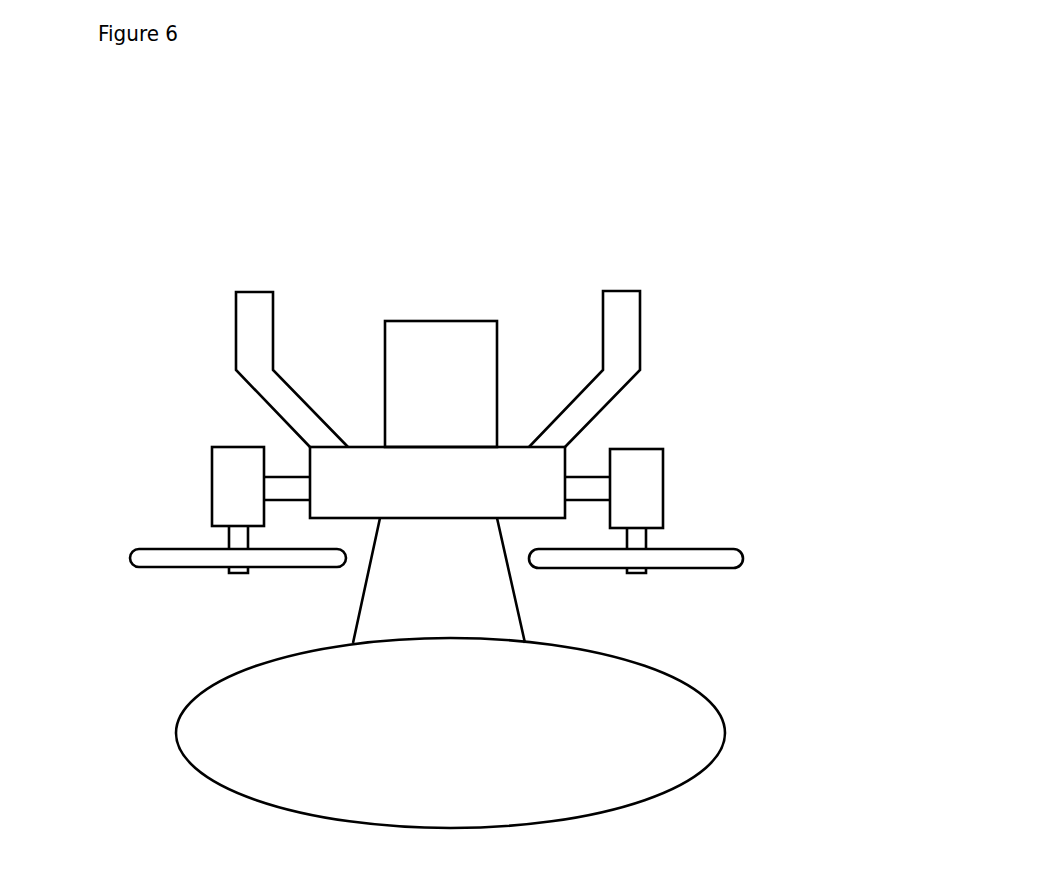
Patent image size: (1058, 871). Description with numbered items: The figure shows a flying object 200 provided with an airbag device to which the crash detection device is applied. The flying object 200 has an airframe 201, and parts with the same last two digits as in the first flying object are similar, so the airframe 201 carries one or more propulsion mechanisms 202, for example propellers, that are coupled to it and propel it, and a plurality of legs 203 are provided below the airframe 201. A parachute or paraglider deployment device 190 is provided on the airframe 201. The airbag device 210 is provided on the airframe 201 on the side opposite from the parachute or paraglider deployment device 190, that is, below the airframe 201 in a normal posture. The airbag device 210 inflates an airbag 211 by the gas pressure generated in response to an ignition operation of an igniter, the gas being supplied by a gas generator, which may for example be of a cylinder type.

The flying object 200 is at (330, 252).
The parachute or paraglider deployment device 190 is at (443, 303).
The airframe 201 is at (536, 475).
The legs 203 is at (255, 303).
The propulsion mechanisms 202 is at (170, 557).
The airbag device 210 is at (729, 752).
The airbag 211 is at (290, 777).